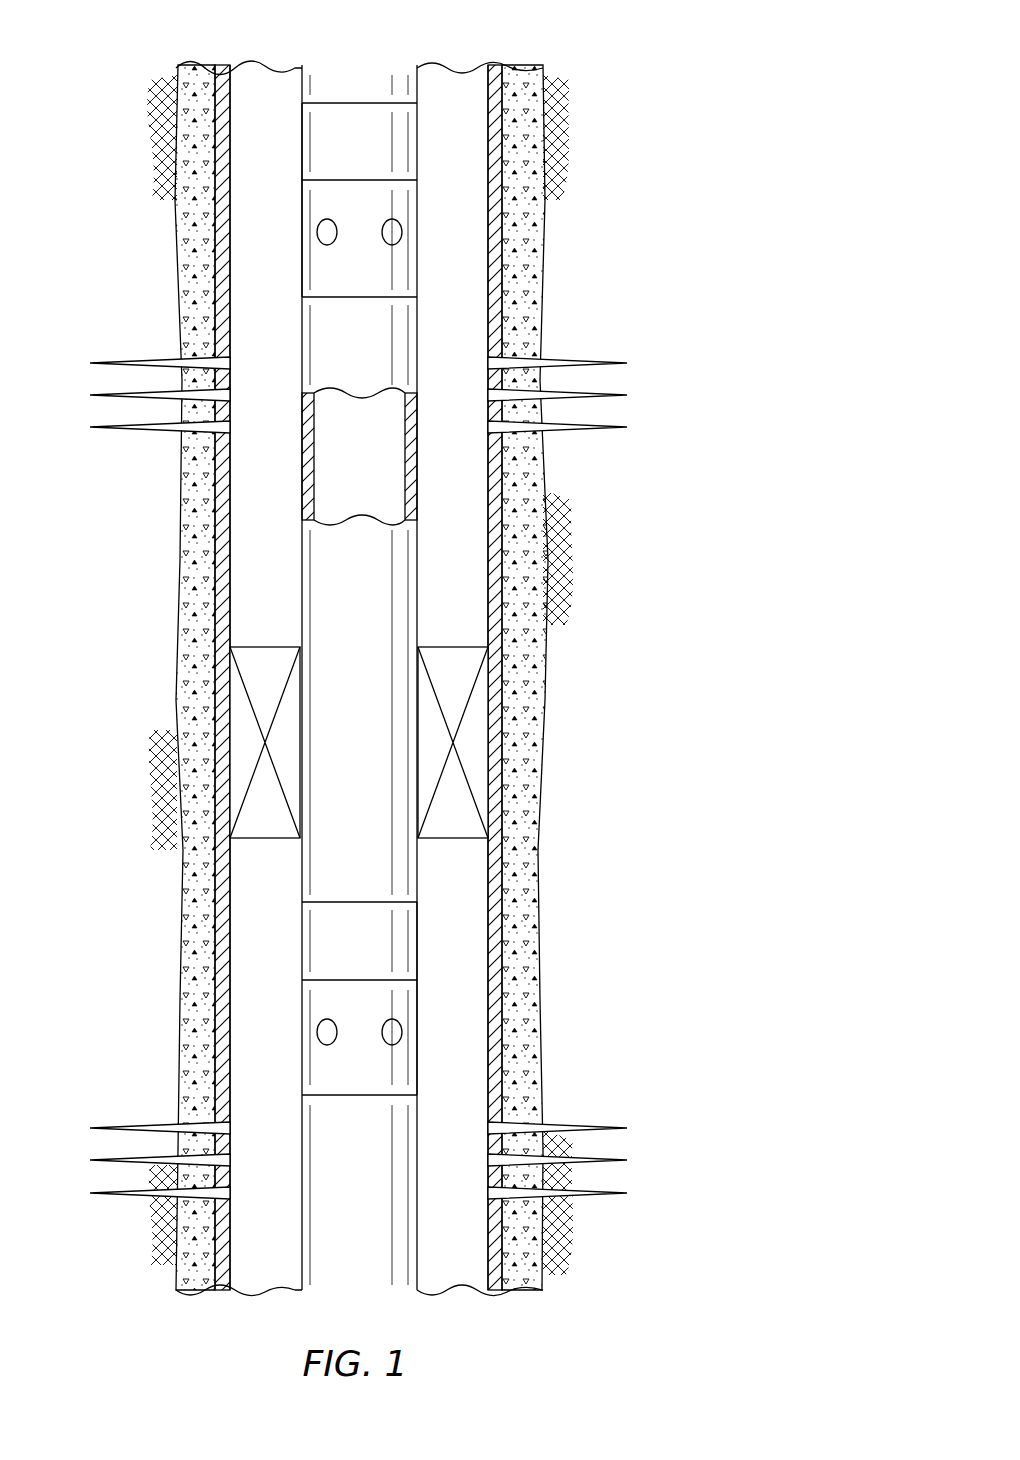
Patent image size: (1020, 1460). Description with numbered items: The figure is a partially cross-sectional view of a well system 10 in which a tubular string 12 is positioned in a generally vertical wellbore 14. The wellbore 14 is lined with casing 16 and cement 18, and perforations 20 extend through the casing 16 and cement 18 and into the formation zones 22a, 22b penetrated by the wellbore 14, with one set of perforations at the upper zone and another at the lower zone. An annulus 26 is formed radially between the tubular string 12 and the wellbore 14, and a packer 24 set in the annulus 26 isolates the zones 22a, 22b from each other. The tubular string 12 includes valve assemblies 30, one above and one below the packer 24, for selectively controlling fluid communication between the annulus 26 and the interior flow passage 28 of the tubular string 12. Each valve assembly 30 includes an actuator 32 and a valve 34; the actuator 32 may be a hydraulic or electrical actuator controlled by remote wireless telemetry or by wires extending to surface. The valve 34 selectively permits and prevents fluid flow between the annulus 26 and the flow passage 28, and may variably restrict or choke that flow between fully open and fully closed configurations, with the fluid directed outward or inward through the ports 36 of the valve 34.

The well system 10 is at (440, 649).
The tubular string 12 is at (300, 583).
The wellbore 14 is at (490, 852).
The casing 16 is at (213, 505).
The cement 18 is at (178, 533).
The perforations 20 is at (157, 352).
The formation zone 22a is at (720, 413).
The formation zone 22b is at (780, 1100).
The packer 24 is at (460, 645).
The annulus 26 is at (466, 318).
The interior flow passage 28 is at (347, 488).
The valve assembly 30 is at (419, 191).
The actuator 32 is at (302, 128).
The valve 34 is at (302, 232).
The ports 36 is at (402, 232).